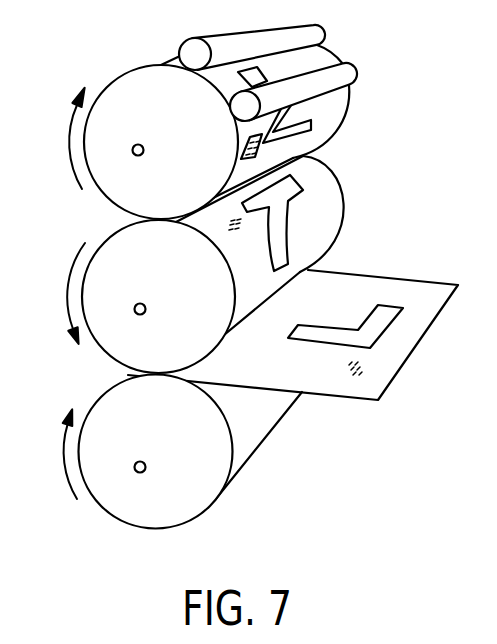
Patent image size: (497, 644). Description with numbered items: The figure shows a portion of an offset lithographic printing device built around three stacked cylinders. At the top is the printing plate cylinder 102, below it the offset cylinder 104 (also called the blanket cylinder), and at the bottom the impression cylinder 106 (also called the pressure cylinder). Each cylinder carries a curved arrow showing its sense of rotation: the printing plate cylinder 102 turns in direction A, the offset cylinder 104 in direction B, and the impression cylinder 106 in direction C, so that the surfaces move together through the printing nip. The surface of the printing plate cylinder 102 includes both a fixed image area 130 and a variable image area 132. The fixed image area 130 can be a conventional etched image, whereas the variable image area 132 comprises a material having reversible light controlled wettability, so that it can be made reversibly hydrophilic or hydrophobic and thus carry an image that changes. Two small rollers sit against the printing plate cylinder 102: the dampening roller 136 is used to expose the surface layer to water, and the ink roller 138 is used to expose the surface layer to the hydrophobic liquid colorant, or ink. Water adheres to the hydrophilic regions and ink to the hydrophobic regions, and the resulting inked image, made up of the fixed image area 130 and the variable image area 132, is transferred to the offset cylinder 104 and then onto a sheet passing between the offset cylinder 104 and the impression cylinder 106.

The printing plate cylinder 102 is at (327, 112).
The offset cylinder 104 is at (327, 205).
The impression cylinder 106 is at (247, 435).
The fixed image area 130 is at (385, 312).
The variable image area 132 is at (367, 368).
The dampening roller 136 is at (191, 56).
The ink roller 138 is at (345, 68).
The rotation direction arrow A is at (68, 143).
The rotation direction arrow B is at (65, 297).
The rotation direction arrow C is at (63, 451).